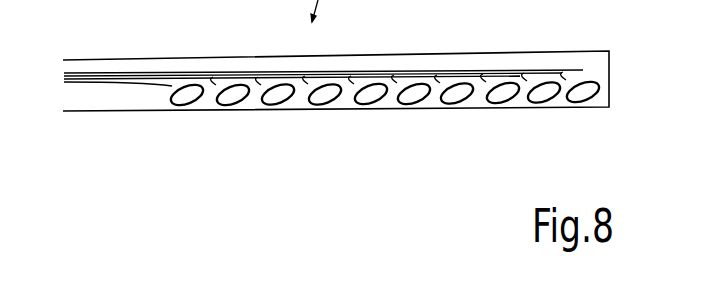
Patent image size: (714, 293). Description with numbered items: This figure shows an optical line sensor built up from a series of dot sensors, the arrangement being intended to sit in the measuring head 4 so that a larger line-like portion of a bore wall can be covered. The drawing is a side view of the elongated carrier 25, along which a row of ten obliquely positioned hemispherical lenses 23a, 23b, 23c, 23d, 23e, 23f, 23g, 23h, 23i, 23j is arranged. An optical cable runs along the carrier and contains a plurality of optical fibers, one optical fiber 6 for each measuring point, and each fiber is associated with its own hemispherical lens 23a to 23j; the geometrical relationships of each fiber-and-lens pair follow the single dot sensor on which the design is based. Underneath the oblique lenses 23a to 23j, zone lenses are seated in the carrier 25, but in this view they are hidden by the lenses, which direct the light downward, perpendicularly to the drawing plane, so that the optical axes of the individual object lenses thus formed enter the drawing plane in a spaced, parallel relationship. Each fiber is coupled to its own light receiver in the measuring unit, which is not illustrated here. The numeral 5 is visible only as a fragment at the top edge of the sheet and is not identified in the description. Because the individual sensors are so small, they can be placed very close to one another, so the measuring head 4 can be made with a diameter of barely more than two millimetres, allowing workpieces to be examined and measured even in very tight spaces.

The measuring head 4 is at (145, 124).
The light source 5 is at (565, 6).
The optical fiber 6 is at (113, 72).
The carrier 25 is at (83, 104).
The hemispherical lens 23a is at (190, 110).
The hemispherical lens 23b is at (233, 108).
The hemispherical lens 23c is at (283, 110).
The hemispherical lens 23d is at (328, 107).
The hemispherical lens 23e is at (371, 94).
The hemispherical lens 23f is at (414, 94).
The hemispherical lens 23g is at (457, 93).
The hemispherical lens 23h is at (503, 93).
The hemispherical lens 23i is at (537, 110).
The hemispherical lens 23j is at (587, 107).